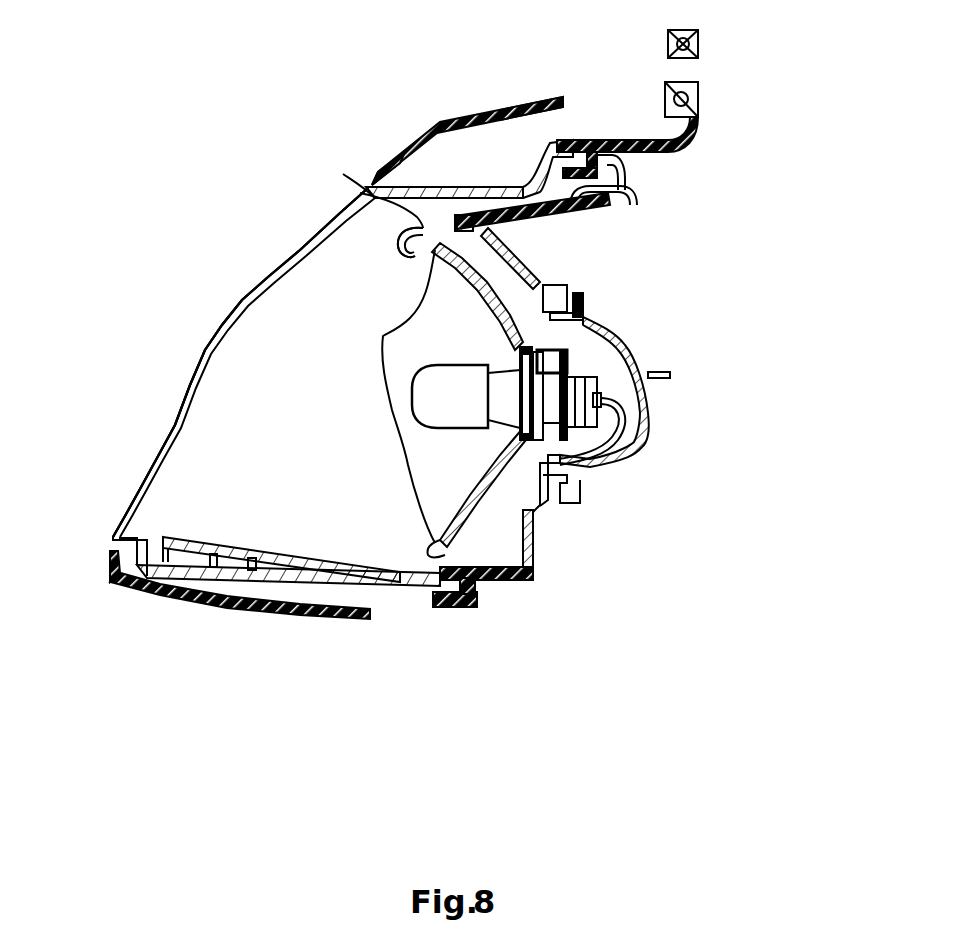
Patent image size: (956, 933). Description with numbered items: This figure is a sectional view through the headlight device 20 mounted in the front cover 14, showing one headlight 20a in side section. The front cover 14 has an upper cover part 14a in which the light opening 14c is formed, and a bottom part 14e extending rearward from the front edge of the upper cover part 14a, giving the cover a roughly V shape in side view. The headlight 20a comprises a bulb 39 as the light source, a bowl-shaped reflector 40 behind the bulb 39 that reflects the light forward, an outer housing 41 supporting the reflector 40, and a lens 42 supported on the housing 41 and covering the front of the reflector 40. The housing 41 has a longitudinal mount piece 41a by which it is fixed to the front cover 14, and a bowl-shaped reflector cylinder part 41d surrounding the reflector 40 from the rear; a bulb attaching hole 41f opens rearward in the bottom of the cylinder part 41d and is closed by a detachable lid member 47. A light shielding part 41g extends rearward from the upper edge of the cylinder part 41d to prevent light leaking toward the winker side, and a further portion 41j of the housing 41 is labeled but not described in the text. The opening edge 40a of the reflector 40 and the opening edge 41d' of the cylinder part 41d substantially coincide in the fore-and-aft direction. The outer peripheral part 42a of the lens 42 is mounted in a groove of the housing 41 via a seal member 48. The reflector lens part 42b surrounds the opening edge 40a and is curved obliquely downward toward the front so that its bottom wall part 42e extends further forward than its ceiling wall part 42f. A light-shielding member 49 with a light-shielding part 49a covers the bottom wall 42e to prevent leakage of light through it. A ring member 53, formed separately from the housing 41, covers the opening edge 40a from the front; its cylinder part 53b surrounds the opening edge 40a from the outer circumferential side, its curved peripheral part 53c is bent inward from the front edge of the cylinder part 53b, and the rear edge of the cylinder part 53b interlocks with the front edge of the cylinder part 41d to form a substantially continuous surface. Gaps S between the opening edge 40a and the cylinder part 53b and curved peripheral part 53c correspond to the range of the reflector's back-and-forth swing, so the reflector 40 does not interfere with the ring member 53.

The headlight device 20 is at (150, 136).
The headlight 20a is at (200, 348).
The lens 42 is at (240, 300).
The outer peripheral part of lens 42a is at (556, 145).
The reflector lens part 42b is at (150, 458).
The bottom wall part 42e is at (373, 590).
The ceiling wall part 42f is at (450, 188).
The front cover 14 is at (486, 110).
The upper cover part 14a is at (525, 100).
The light opening 14c is at (377, 178).
The bottom part 14e is at (265, 618).
The bulb 39 is at (413, 418).
The reflector 40 is at (494, 282).
The opening edge of reflector 40a is at (407, 543).
The housing 41 is at (538, 565).
The longitudinal mount piece 41a is at (700, 36).
The reflector cylinder part 41d is at (591, 241).
The opening edge of reflector cylinder part 41d' is at (527, 618).
The bulb attaching hole 41f is at (568, 290).
The light shielding part 41g is at (622, 197).
The housing rib 41j is at (627, 165).
The lid member 47 is at (650, 410).
The seal member 48 is at (597, 150).
The light-shielding member 49 is at (222, 540).
The light-shielding part 49a is at (283, 552).
The ring member 53 is at (386, 226).
The cylinder part 53b is at (362, 190).
The curved peripheral part 53c is at (398, 250).
The gap S is at (400, 286).